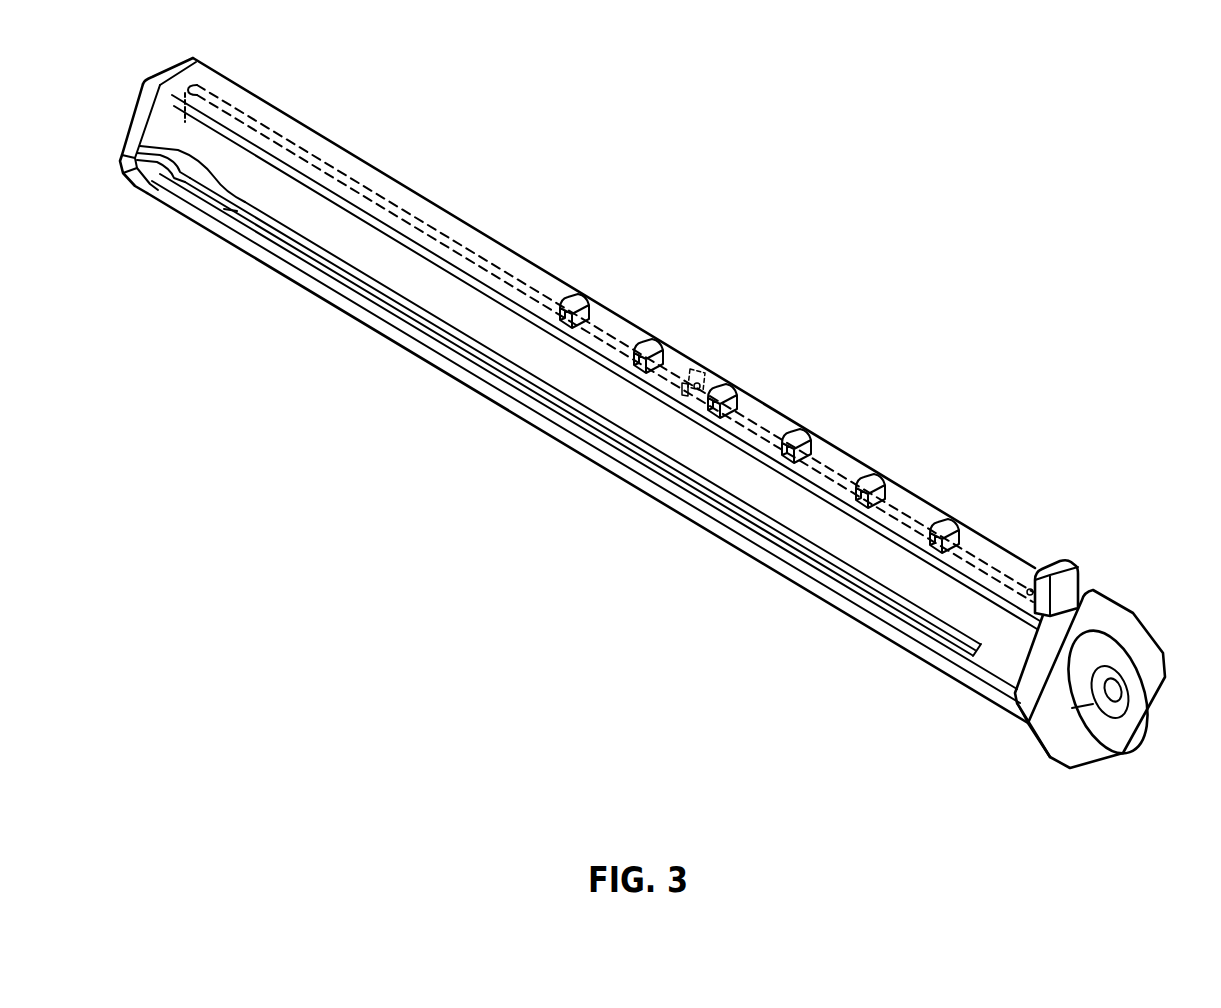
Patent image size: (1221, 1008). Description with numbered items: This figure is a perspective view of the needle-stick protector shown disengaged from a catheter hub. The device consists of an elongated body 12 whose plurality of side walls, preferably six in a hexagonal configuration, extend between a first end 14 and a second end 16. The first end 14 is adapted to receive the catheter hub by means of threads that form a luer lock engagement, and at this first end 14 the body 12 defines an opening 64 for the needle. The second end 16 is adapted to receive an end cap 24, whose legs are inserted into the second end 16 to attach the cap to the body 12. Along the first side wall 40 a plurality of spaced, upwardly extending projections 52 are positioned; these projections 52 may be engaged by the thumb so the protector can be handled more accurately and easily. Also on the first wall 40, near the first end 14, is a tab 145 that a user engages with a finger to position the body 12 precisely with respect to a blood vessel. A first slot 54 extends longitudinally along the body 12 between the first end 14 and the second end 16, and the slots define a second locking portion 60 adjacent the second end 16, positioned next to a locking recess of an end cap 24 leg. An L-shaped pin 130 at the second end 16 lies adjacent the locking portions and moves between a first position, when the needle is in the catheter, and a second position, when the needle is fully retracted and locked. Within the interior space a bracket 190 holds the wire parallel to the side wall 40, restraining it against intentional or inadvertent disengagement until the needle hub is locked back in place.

The body 12 is at (418, 193).
The first end 14 is at (1127, 592).
The second end 16 is at (194, 57).
The end cap 24 is at (168, 66).
The first side wall 40 is at (929, 497).
The projections 52 is at (740, 400).
The first slot 54 is at (905, 612).
The second locking portion 60 is at (192, 180).
The opening for the needle 64 is at (1115, 690).
The L-shaped pin 130 is at (333, 165).
The tab 145 is at (1062, 560).
The bracket 190 is at (700, 360).